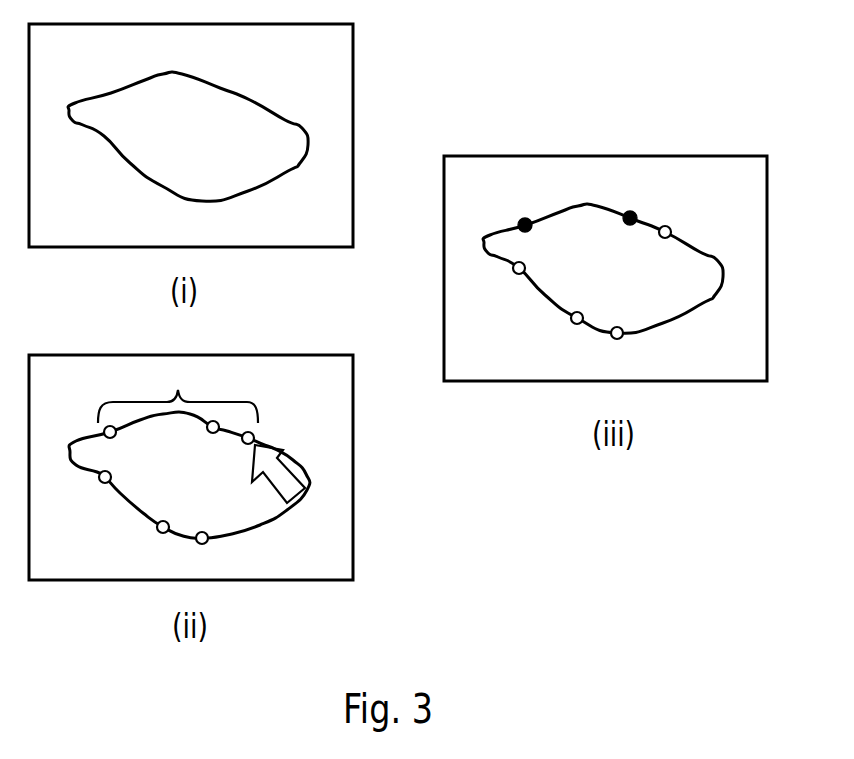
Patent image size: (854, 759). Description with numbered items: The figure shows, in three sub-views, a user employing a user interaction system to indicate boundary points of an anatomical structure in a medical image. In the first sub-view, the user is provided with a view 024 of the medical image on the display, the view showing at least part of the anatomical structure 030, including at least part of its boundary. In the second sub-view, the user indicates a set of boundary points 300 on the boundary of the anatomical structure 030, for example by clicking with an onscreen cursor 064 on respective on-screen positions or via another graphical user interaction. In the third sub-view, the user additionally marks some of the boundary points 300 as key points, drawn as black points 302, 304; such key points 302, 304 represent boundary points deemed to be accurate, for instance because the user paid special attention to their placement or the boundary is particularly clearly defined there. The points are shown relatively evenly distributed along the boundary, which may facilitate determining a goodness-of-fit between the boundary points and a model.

The view of the medical image 024 is at (277, 248).
The anatomical structure 030 is at (108, 137).
The set of boundary points 300 is at (178, 390).
The key point 302 is at (525, 220).
The key point 304 is at (632, 215).
The onscreen cursor 064 is at (293, 503).